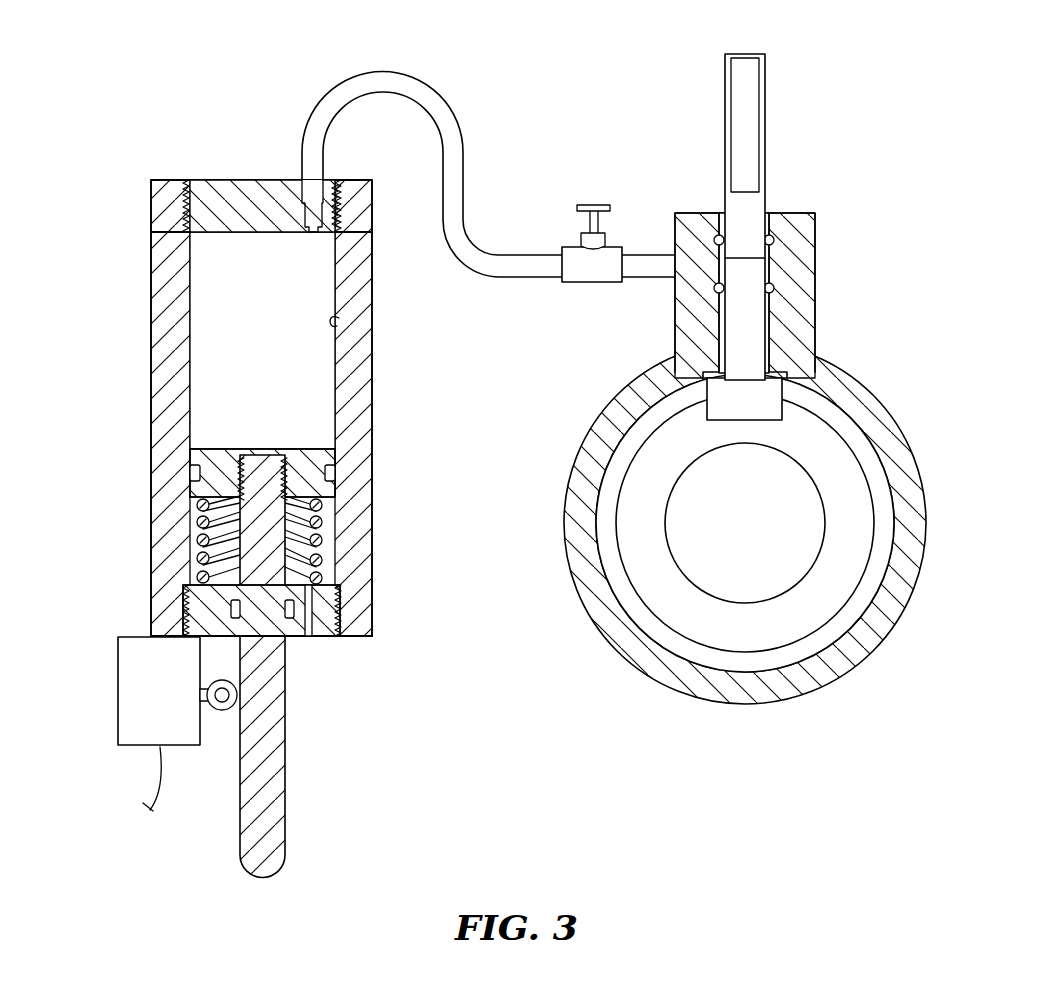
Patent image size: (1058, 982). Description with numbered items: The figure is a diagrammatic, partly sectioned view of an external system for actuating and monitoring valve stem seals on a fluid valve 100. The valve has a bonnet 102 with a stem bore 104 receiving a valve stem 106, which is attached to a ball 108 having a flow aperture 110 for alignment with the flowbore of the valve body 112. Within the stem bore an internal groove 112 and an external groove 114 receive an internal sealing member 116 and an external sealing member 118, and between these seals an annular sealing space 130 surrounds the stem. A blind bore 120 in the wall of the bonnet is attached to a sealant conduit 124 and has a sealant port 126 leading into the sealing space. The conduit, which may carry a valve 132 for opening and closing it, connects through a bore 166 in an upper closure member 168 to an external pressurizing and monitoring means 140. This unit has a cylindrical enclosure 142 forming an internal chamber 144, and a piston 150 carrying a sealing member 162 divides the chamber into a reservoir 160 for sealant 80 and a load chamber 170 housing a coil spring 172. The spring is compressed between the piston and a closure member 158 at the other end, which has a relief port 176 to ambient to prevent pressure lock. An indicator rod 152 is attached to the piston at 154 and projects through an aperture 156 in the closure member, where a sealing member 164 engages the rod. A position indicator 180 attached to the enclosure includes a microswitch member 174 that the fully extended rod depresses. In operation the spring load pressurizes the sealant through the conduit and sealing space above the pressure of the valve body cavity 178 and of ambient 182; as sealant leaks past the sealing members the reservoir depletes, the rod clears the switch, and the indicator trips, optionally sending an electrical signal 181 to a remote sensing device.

The sealant 80 is at (195, 347).
The fluid valve 100 is at (716, 379).
The bonnet 102 is at (800, 318).
The stem bore 104 is at (770, 340).
The valve stem 106 is at (750, 360).
The ball 108 is at (655, 478).
The flow aperture 110 is at (741, 602).
The valve body 112 is at (578, 468).
The external groove 114 is at (772, 238).
The internal sealing member 116 is at (700, 292).
The external sealing member 118 is at (718, 238).
The blind bore 120 is at (710, 250).
The sealant conduit 124 is at (641, 282).
The sealant port 126 is at (772, 288).
The annular sealing space 130 is at (772, 262).
The valve 132 is at (594, 283).
The external pressurizing and monitoring means 140 is at (256, 497).
The enclosure 142 is at (368, 406).
The internal chamber 144 is at (339, 318).
The piston 150 is at (192, 465).
The indicator rod 152 is at (243, 543).
The attachment point 154 is at (243, 481).
The aperture 156 is at (300, 637).
The closure member 158 is at (336, 606).
The reservoir 160 is at (217, 232).
The sealing member 162 is at (345, 471).
The sealing member 164 is at (320, 596).
The bore 166 is at (340, 196).
The upper closure member 168 is at (257, 182).
The load chamber 170 is at (203, 569).
The coil spring 172 is at (197, 578).
The microswitch member 174 is at (222, 711).
The relief port 176 is at (320, 637).
The valve body cavity 178 is at (642, 614).
The position indicator 180 is at (128, 660).
The electrical signal 181 is at (150, 790).
The ambient 182 is at (772, 217).